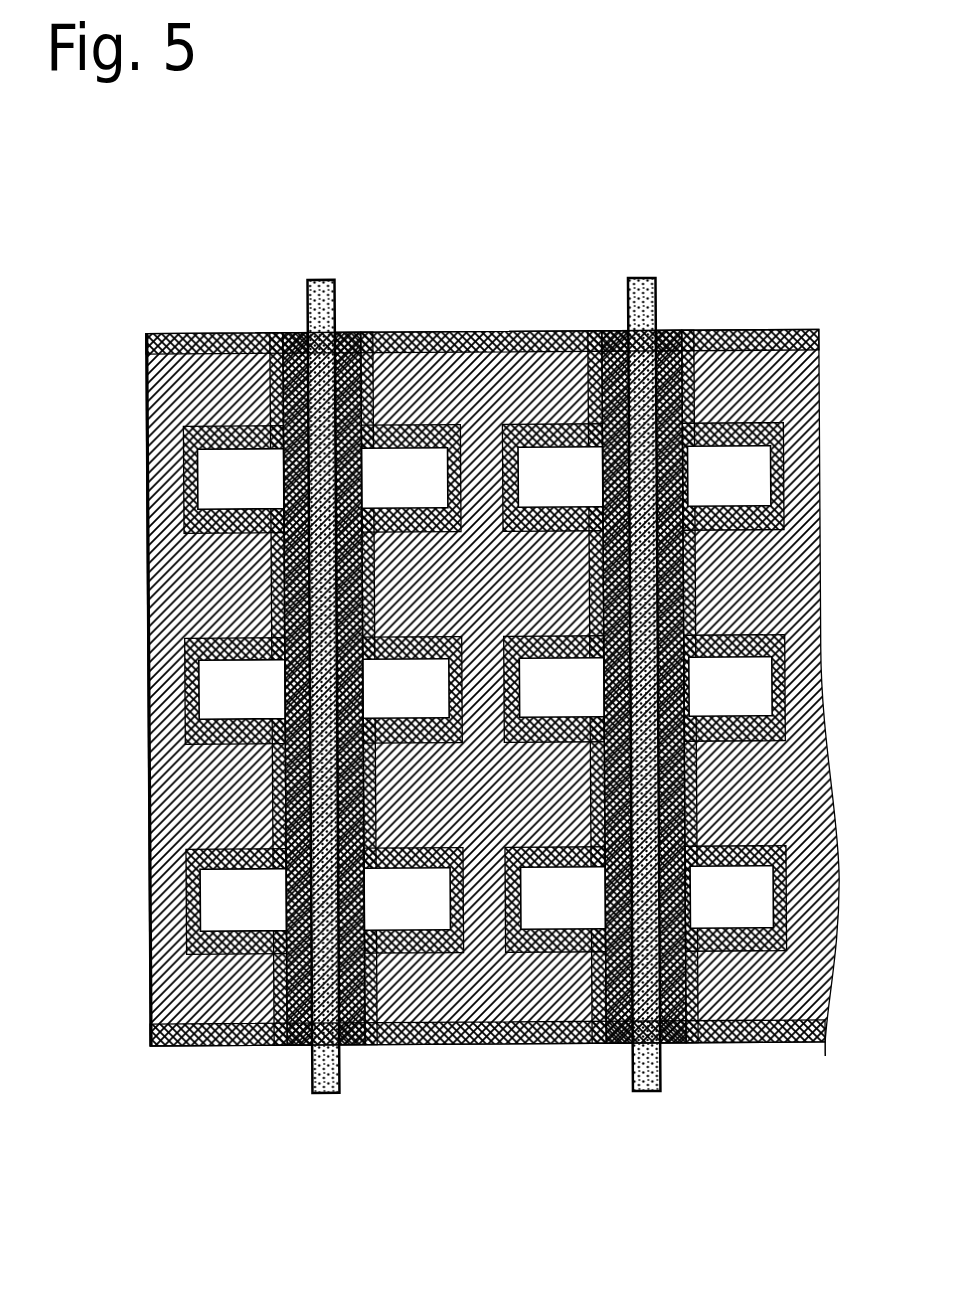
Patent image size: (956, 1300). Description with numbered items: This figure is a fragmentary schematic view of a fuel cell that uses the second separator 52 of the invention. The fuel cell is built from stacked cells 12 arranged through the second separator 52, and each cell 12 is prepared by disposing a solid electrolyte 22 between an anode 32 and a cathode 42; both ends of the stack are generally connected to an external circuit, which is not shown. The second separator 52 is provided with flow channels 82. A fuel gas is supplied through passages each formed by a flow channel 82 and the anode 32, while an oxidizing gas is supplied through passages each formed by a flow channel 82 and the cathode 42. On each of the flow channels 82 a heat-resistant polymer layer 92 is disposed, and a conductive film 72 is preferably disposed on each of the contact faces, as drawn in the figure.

The cell 12 is at (274, 1103).
The solid electrolyte 22 is at (318, 280).
The anode 32 is at (347, 333).
The cathode 42 is at (300, 333).
The second separator 52 is at (203, 390).
The conductive film 72 is at (590, 390).
The flow channel 82 is at (486, 688).
The heat-resistant polymer layer 92 is at (503, 445).